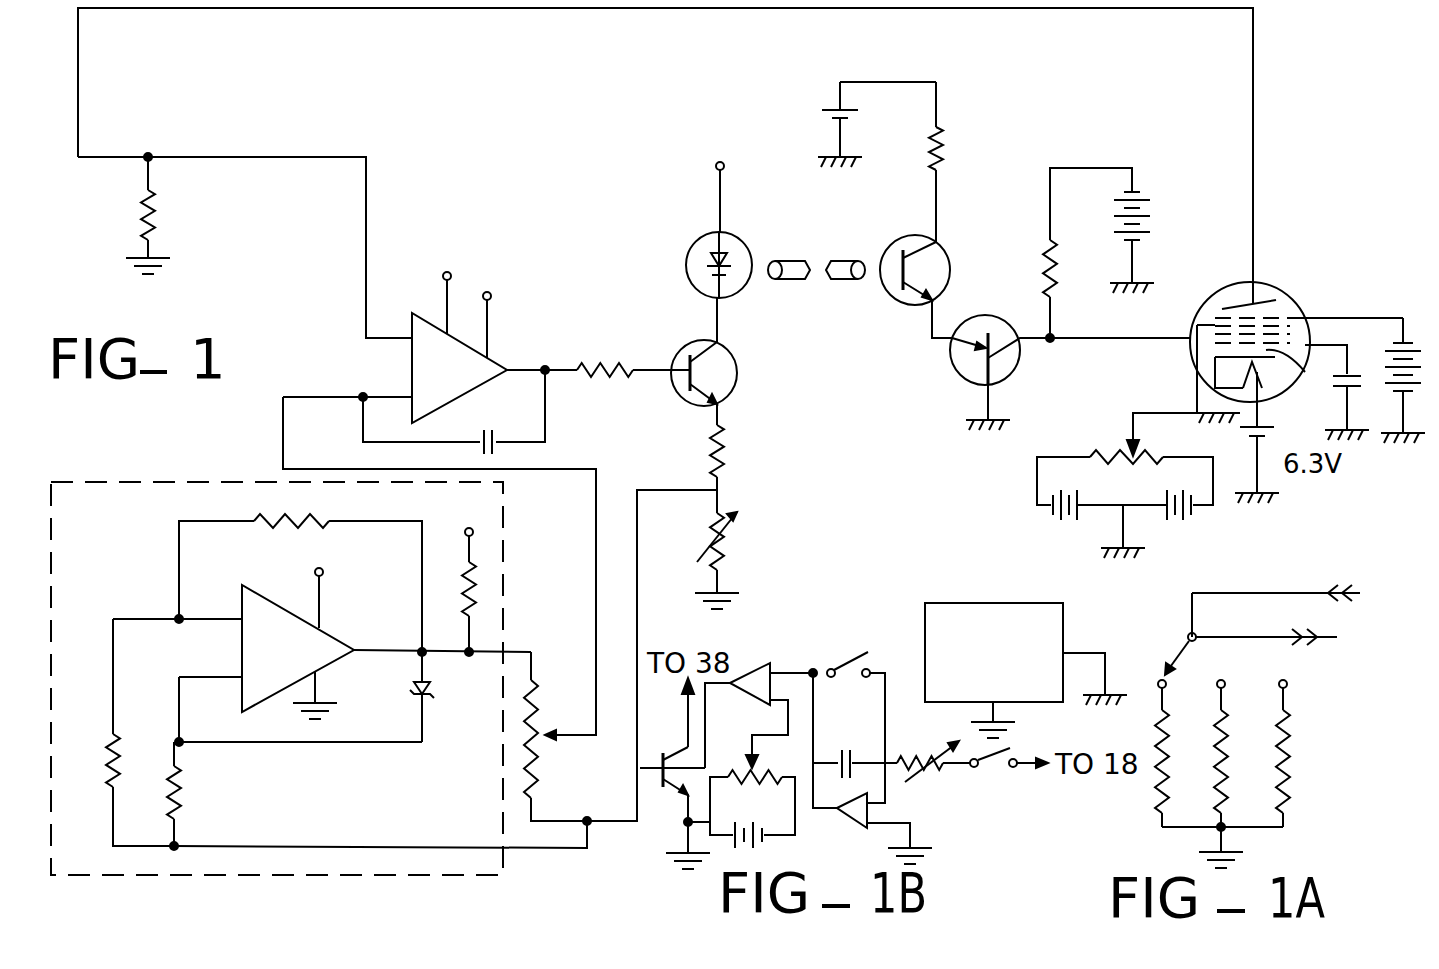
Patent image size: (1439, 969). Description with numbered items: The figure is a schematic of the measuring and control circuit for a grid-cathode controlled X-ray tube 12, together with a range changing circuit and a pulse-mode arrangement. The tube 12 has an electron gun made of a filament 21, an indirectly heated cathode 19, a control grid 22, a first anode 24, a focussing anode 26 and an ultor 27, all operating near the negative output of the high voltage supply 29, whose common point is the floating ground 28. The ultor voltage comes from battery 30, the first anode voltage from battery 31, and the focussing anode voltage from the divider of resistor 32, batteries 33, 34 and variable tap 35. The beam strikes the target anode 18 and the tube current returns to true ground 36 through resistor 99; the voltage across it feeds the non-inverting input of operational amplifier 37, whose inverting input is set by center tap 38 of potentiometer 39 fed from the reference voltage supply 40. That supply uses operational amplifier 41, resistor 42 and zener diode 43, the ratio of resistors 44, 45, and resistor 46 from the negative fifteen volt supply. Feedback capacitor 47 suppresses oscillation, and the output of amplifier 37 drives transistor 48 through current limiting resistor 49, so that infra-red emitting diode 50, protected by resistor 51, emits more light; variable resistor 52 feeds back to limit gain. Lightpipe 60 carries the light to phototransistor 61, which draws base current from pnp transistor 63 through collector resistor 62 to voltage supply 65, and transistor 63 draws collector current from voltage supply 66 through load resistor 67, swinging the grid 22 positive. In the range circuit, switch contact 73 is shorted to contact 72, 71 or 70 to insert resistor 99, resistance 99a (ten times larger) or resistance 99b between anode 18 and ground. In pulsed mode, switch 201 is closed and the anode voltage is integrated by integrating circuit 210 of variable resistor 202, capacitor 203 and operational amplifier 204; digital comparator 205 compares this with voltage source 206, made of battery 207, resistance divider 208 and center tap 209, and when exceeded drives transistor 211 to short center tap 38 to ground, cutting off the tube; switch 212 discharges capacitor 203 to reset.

In FIG. 1, the X-ray tube 12 is at (1262, 286).
In FIG. 1, the target anode 18 is at (1240, 305).
In FIG. 1A, the target anode 18 is at (1360, 592).
In FIG. 1, the indirectly heated cathode 19 is at (1318, 382).
In FIG. 1, the filament 21 is at (1278, 374).
In FIG. 1, the control grid 22 is at (1290, 343).
In FIG. 1, the first anode 24 is at (1283, 334).
In FIG. 1, the focussing anode 26 is at (1283, 326).
In FIG. 1, the ultor 27 is at (1283, 318).
In FIG. 1, the floating ground 28 is at (820, 157).
In FIG. 1, the high voltage supply 29 is at (972, 603).
In FIG. 1, the battery 30 is at (1403, 320).
In FIG. 1, the battery 31 is at (1352, 386).
In FIG. 1, the resistor 32 is at (1118, 452).
In FIG. 1, the battery 33 is at (1037, 482).
In FIG. 1, the battery 34 is at (1200, 512).
In FIG. 1, the variable tap 35 is at (1172, 412).
In FIG. 1, the true ground 36 is at (1035, 728).
In FIG. 1, the operational amplifier 37 is at (412, 313).
In FIG. 1A, the operational amplifier 37 is at (1287, 641).
In FIG. 1, the center tap 38 is at (556, 740).
In FIG. 1, the resistance divider potentiometer 39 is at (535, 685).
In FIG. 1, the reference voltage supply 40 is at (130, 482).
In FIG. 1, the operational amplifier 41 is at (262, 700).
In FIG. 1, the resistor 42 is at (182, 802).
In FIG. 1, the zener diode 43 is at (430, 700).
In FIG. 1, the resistor 44 is at (292, 527).
In FIG. 1, the resistor 45 is at (118, 742).
In FIG. 1, the resistor 46 is at (478, 592).
In FIG. 1, the feedback capacitor 47 is at (485, 440).
In FIG. 1, the transistor 48 is at (740, 374).
In FIG. 1, the current limiting resistor 49 is at (604, 380).
In FIG. 1, the infra-red emitting diode 50 is at (688, 258).
In FIG. 1, the current limiting resistor 51 is at (723, 448).
In FIG. 1, the variable resistor 52 is at (733, 562).
In FIG. 1, the lightpipe 60 is at (790, 262).
In FIG. 1, the phototransistor 61 is at (905, 302).
In FIG. 1, the collector resistor 62 is at (950, 132).
In FIG. 1, the pnp transistor 63 is at (960, 374).
In FIG. 1, the voltage supply 65 is at (838, 106).
In FIG. 1, the voltage supply 66 is at (1115, 168).
In FIG. 1, the load resistor 67 is at (1045, 262).
In FIG. 1A, the switch contact 70 is at (1168, 682).
In FIG. 1A, the switch contact 71 is at (1226, 682).
In FIG. 1A, the switch contact 72 is at (1288, 684).
In FIG. 1A, the switch contact 73 is at (1197, 633).
In FIG. 1, the resistor 99 is at (140, 218).
In FIG. 1A, the resistor 99 is at (1290, 793).
In FIG. 1A, the resistance 99a is at (1215, 780).
In FIG. 1A, the resistance 99b is at (1160, 787).
In FIG. 1B, the switch 201 is at (990, 773).
In FIG. 1B, the variable resistor 202 is at (908, 755).
In FIG. 1B, the capacitor 203 is at (850, 758).
In FIG. 1B, the operational amplifier 204 is at (872, 810).
In FIG. 1B, the digital comparator 205 is at (768, 660).
In FIG. 1B, the voltage source 206 is at (720, 840).
In FIG. 1B, the battery 207 is at (772, 830).
In FIG. 1B, the resistance divider 208 is at (745, 762).
In FIG. 1B, the center tap 209 is at (790, 716).
In FIG. 1B, the integrating circuit 210 is at (840, 822).
In FIG. 1B, the transistor 211 is at (666, 809).
In FIG. 1B, the switch 212 is at (870, 650).